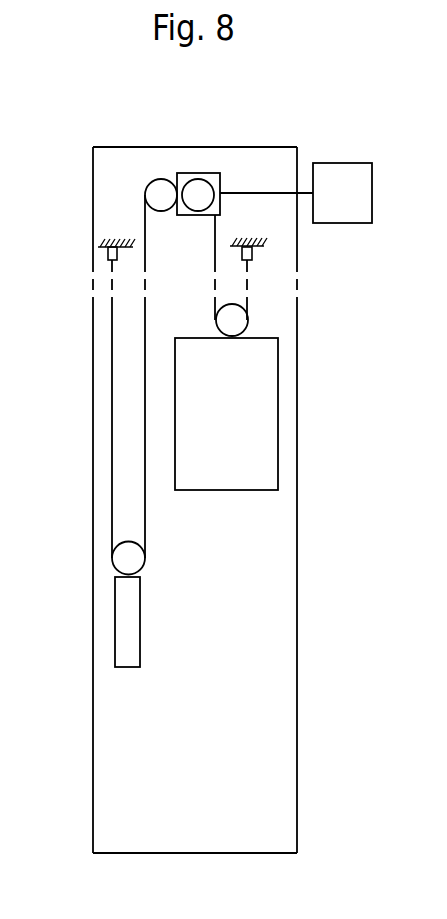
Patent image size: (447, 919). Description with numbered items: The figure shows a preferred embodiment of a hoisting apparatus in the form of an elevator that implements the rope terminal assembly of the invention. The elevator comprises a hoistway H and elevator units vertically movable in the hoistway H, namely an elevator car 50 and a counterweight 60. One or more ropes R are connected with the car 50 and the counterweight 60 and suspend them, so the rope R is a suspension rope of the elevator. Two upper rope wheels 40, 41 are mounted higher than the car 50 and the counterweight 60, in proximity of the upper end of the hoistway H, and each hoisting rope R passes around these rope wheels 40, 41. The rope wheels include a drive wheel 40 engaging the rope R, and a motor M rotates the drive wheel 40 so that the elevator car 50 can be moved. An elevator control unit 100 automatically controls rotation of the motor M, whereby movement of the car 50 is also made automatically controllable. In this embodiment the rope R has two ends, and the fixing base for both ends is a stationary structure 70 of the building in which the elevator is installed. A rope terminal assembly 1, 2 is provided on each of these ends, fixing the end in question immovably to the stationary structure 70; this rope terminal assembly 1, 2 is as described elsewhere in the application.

The rope terminal assembly 1 is at (190, 254).
The rope terminal assembly 2 is at (111, 257).
The drive wheel 40 is at (200, 216).
The upper rope wheel 41 is at (160, 178).
The elevator car 50 is at (238, 434).
The counterweight 60 is at (114, 616).
The stationary structure 70 is at (113, 240).
The elevator control unit 100 is at (340, 163).
The motor M is at (244, 191).
The rope R is at (144, 392).
The hoistway H is at (195, 500).